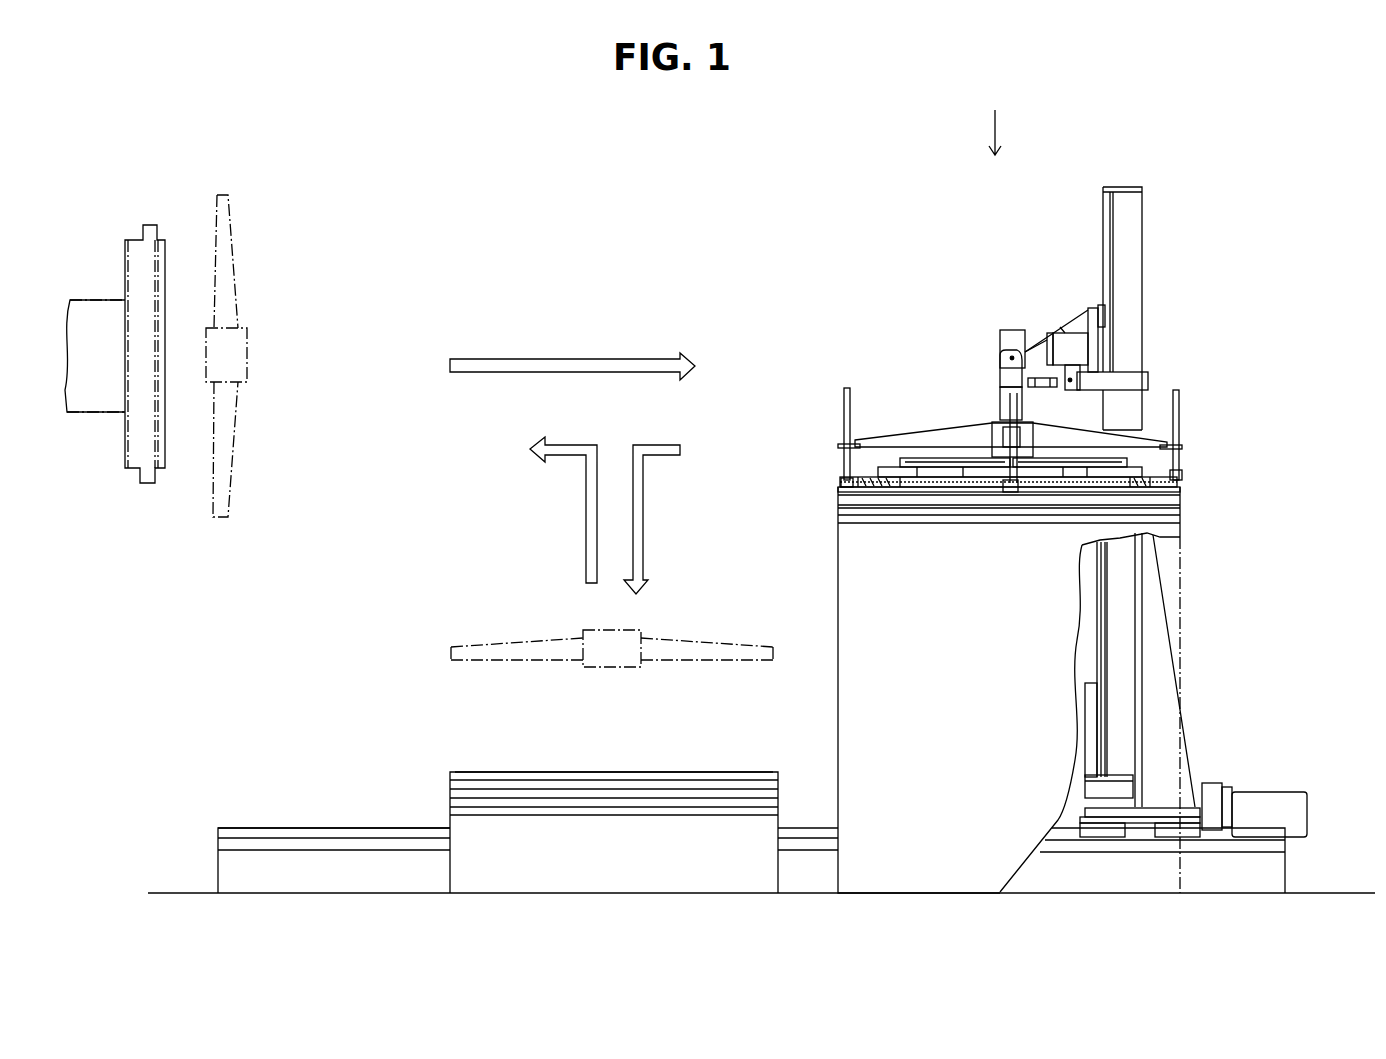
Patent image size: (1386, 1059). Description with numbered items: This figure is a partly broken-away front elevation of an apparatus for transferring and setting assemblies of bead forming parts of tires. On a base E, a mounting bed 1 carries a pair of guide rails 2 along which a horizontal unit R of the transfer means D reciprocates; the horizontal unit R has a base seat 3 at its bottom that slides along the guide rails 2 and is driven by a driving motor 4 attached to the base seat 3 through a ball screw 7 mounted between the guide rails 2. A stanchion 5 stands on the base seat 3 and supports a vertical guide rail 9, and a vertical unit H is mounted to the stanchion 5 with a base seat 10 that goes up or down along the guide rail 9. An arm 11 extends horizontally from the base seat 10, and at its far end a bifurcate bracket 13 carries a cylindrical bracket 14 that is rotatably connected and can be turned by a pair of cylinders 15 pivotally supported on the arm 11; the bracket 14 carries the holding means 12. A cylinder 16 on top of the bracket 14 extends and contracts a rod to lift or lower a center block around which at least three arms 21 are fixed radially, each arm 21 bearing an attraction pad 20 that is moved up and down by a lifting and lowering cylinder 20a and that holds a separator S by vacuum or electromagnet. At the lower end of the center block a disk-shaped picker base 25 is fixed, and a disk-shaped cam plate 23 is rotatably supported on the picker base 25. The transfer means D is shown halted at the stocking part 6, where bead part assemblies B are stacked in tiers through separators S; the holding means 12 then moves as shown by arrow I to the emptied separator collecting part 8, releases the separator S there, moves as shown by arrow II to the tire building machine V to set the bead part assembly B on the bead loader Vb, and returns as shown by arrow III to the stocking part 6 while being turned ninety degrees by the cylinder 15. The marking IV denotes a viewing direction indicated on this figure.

The mounting bed 1 is at (340, 845).
The guide rails 2 is at (275, 828).
The base seat 3 is at (1150, 822).
The driving motor 4 is at (1247, 788).
The stanchion 5 is at (1135, 237).
The stocking part 6 is at (832, 617).
The ball screw 7 is at (446, 790).
The collecting part 8 is at (496, 768).
The vertical guide rail 9 is at (1108, 213).
The base seat 10 is at (1090, 307).
The arm 11 is at (1057, 328).
The holding means 12 is at (232, 218).
The bifurcate bracket 13 is at (1013, 332).
The cylindrical bracket 14 is at (997, 373).
The cylinders 15 is at (1127, 377).
The cylinder 16 is at (1000, 345).
The attraction pads 20 is at (843, 474).
The lifting and lowering cylinders 20a is at (843, 414).
The arms 21 is at (892, 433).
The cam plate 23 is at (1060, 463).
The picker base 25 is at (917, 463).
The bead part assemblies B is at (1140, 490).
The transfer means D is at (247, 185).
The base E is at (180, 893).
The vertical unit H is at (1063, 310).
The horizontal unit R is at (1179, 620).
The separators S is at (837, 488).
The tire building machine V is at (105, 296).
The bead loader Vb is at (155, 225).
The arrow I is at (652, 519).
The arrow II is at (563, 510).
The arrow III is at (572, 356).
The view IV is at (994, 120).